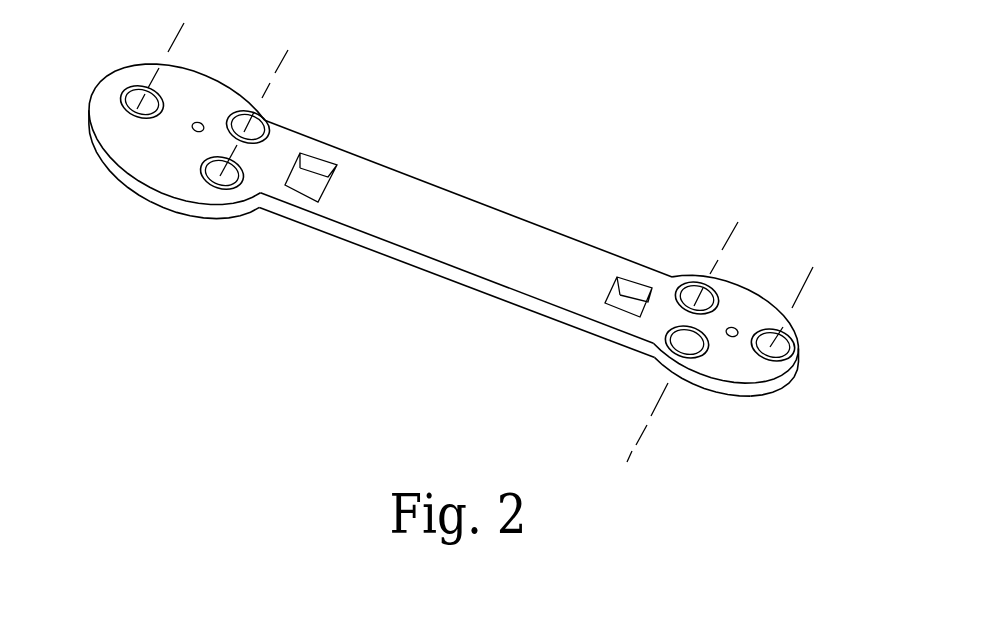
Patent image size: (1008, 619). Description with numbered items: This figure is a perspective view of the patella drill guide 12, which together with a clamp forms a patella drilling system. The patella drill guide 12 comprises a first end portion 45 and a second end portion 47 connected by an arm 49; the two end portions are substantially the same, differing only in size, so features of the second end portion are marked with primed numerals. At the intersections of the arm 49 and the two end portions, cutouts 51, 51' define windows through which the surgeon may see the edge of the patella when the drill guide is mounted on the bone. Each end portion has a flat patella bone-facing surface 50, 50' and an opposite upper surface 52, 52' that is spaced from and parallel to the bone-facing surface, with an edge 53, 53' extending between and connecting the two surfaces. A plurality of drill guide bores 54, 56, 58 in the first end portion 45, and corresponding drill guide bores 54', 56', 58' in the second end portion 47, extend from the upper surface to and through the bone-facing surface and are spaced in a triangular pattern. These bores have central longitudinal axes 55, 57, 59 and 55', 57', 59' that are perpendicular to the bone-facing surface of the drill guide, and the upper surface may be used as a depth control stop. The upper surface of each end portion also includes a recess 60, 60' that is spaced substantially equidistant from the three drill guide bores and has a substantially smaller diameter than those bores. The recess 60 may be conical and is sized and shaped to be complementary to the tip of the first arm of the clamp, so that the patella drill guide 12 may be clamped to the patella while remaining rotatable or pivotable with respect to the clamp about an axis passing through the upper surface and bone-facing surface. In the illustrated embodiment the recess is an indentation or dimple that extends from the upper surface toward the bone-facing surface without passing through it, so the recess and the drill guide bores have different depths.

The patella drill guide 12 is at (468, 198).
The first end portion 45 is at (257, 117).
The second end portion 47 is at (698, 297).
The arm 49 is at (547, 240).
The patella bone-facing surface 50 is at (177, 127).
The patella bone-facing surface 50' is at (725, 311).
The cutout 51 is at (321, 161).
The cutout 51' is at (629, 268).
The upper surface 52 is at (195, 229).
The upper surface 52' is at (703, 403).
The edge 53 is at (108, 155).
The edge 53' is at (782, 387).
The drill guide bore 54 is at (133, 82).
The drill guide bore 54' is at (797, 343).
The central longitudinal axis 55 is at (154, 57).
The central longitudinal axis 55' is at (819, 306).
The drill guide bore 56 is at (243, 170).
The drill guide bore 56' is at (708, 348).
The central longitudinal axis 57 is at (201, 159).
The central longitudinal axis 57' is at (623, 422).
The drill guide bore 58 is at (274, 123).
The drill guide bore 58' is at (689, 276).
The central longitudinal axis 59 is at (266, 76).
The central longitudinal axis 59' is at (716, 243).
The recess 60 is at (202, 82).
The recess 60' is at (739, 293).